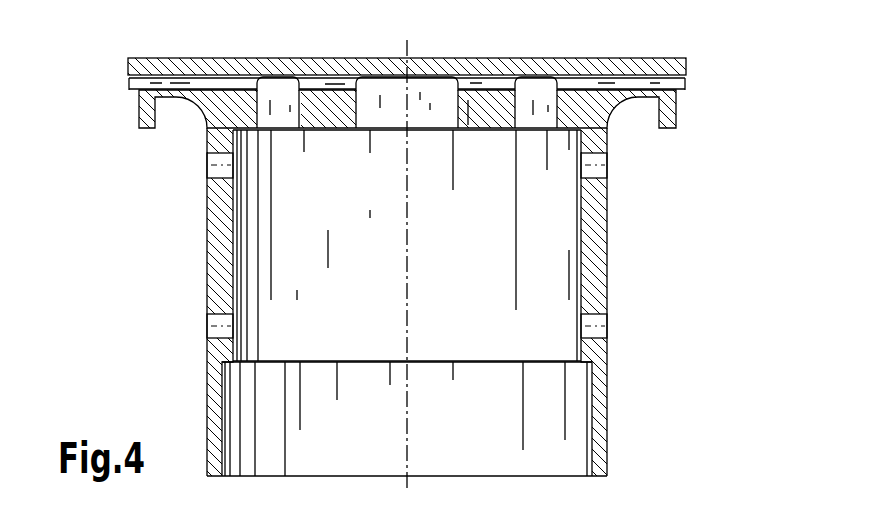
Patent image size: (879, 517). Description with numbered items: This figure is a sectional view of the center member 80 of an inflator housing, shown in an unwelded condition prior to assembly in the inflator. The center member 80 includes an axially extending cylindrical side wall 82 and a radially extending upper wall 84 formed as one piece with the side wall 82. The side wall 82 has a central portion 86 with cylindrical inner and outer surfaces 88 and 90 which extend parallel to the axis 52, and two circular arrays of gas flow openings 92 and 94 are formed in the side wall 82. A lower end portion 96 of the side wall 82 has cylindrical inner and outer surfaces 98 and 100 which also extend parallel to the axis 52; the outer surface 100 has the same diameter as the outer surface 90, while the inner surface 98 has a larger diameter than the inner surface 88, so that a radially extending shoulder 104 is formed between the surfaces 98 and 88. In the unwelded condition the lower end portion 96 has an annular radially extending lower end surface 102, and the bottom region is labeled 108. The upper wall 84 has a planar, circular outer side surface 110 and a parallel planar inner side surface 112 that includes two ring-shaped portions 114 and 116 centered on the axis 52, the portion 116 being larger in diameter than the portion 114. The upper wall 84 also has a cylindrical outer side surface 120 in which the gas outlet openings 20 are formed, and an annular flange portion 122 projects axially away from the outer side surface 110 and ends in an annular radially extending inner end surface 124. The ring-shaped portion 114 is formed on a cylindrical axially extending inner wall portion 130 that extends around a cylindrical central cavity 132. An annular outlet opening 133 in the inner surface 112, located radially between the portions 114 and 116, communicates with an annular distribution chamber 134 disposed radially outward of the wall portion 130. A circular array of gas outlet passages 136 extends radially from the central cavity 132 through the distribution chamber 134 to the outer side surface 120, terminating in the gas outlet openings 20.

The gas outlet openings 20 is at (130, 78).
The axis 52 is at (410, 300).
The center member 80 is at (96, 302).
The side wall 82 is at (205, 268).
The upper wall 84 is at (261, 53).
The central portion 86 is at (222, 285).
The inner surface 88 is at (233, 244).
The outer surface 90 is at (206, 203).
The gas flow openings 92 is at (221, 165).
The gas flow openings 94 is at (212, 327).
The lower end portion 96 is at (600, 393).
The inner surface 98 is at (224, 427).
The outer surface 100 is at (207, 408).
The lower end surface 102 is at (599, 477).
The shoulder 104 is at (228, 362).
The bottom 108 is at (407, 496).
The outer side surface 110 is at (196, 57).
The inner side surface 112 is at (321, 133).
The ring-shaped portion 114 is at (486, 129).
The ring-shaped portion 116 is at (250, 132).
The outer side surface 120 is at (687, 65).
The flange portion 122 is at (138, 115).
The inner end surface 124 is at (146, 131).
The inner wall portion 130 is at (473, 103).
The central cavity 132 is at (425, 105).
The outlet opening 133 is at (537, 132).
The distribution chamber 134 is at (537, 97).
The gas outlet passages 136 is at (178, 82).